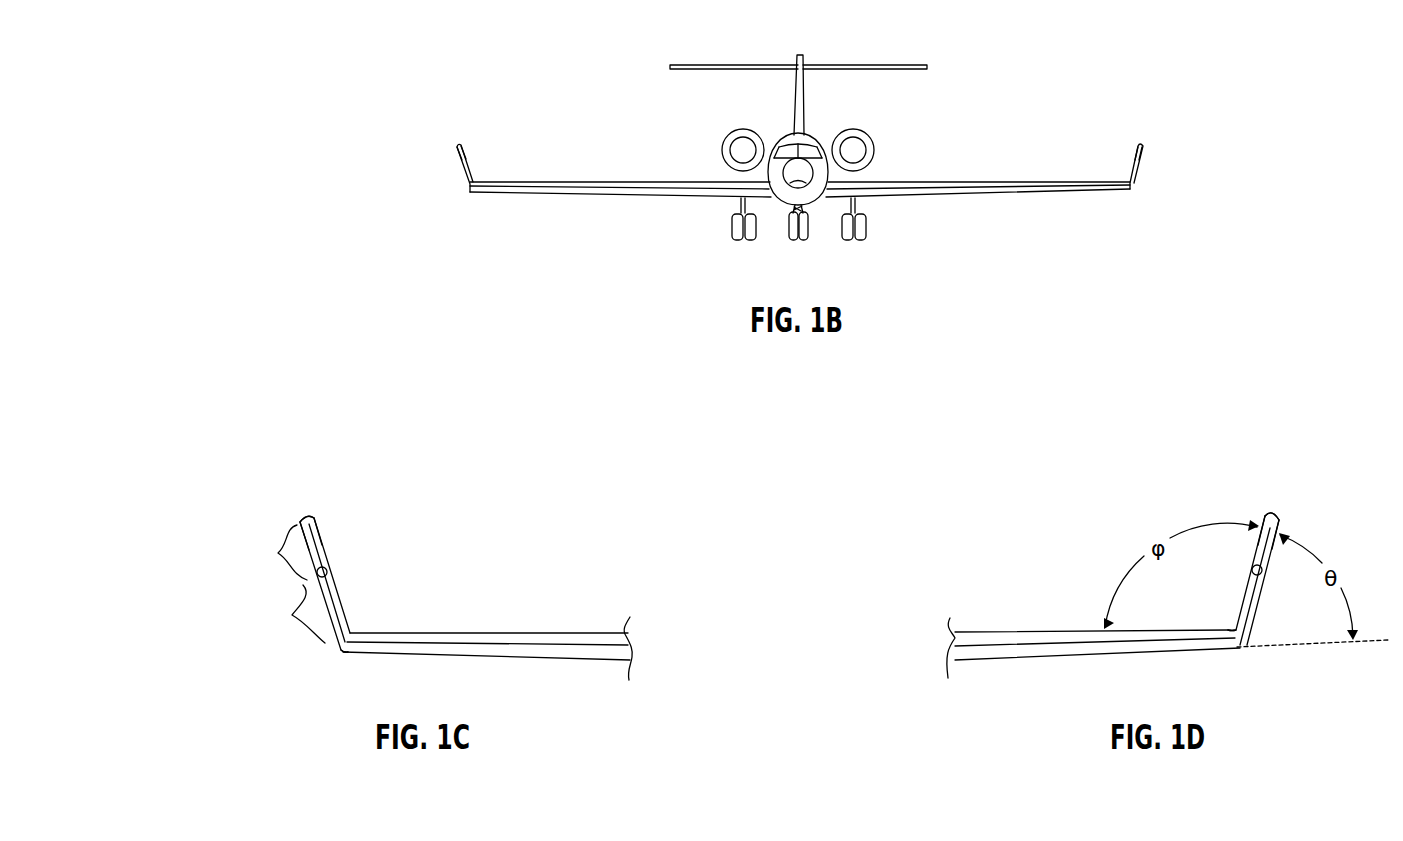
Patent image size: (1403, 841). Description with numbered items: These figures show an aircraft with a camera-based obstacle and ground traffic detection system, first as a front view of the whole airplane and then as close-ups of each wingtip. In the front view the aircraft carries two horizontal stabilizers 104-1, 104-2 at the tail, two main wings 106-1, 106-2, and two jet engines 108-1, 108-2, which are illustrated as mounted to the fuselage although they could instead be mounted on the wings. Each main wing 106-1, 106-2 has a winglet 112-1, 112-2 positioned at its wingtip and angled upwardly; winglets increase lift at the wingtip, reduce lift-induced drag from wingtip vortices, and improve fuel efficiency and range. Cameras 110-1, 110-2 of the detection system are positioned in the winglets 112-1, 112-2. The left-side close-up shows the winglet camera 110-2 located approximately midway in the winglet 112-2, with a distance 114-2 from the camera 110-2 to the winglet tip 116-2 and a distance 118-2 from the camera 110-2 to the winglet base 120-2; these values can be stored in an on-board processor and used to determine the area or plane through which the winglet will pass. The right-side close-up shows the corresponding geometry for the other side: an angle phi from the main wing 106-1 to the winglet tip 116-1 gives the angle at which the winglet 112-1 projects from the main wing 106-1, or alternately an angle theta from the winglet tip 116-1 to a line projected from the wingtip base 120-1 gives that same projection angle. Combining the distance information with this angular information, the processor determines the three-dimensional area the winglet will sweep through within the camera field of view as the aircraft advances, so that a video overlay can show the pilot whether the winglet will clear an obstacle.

In FIG. 1B, the horizontal stabilizer 104-1 is at (920, 64).
In FIG. 1B, the horizontal stabilizer 104-2 is at (677, 64).
In FIG. 1B, the main wing 106-1 is at (1010, 196).
In FIG. 1D, the main wing 106-1 is at (1043, 650).
In FIG. 1B, the main wing 106-2 is at (568, 196).
In FIG. 1B, the jet engine 108-1 is at (876, 149).
In FIG. 1B, the jet engine 108-2 is at (722, 149).
In FIG. 1B, the camera 110-1 is at (1139, 162).
In FIG. 1D, the camera 110-1 is at (1253, 572).
In FIG. 1B, the camera 110-2 is at (458, 163).
In FIG. 1C, the camera 110-2 is at (328, 577).
In FIG. 1B, the winglet 112-1 is at (1134, 149).
In FIG. 1D, the winglet 112-1 is at (1256, 544).
In FIG. 1B, the winglet 112-2 is at (466, 152).
In FIG. 1C, the winglet 112-2 is at (325, 553).
In FIG. 1C, the distance 114-2 is at (260, 552).
In FIG. 1D, the winglet tip 116-1 is at (1285, 502).
In FIG. 1C, the winglet tip 116-2 is at (298, 509).
In FIG. 1C, the distance 118-2 is at (277, 614).
In FIG. 1D, the wingtip base 120-1 is at (1239, 660).
In FIG. 1C, the winglet base 120-2 is at (339, 664).